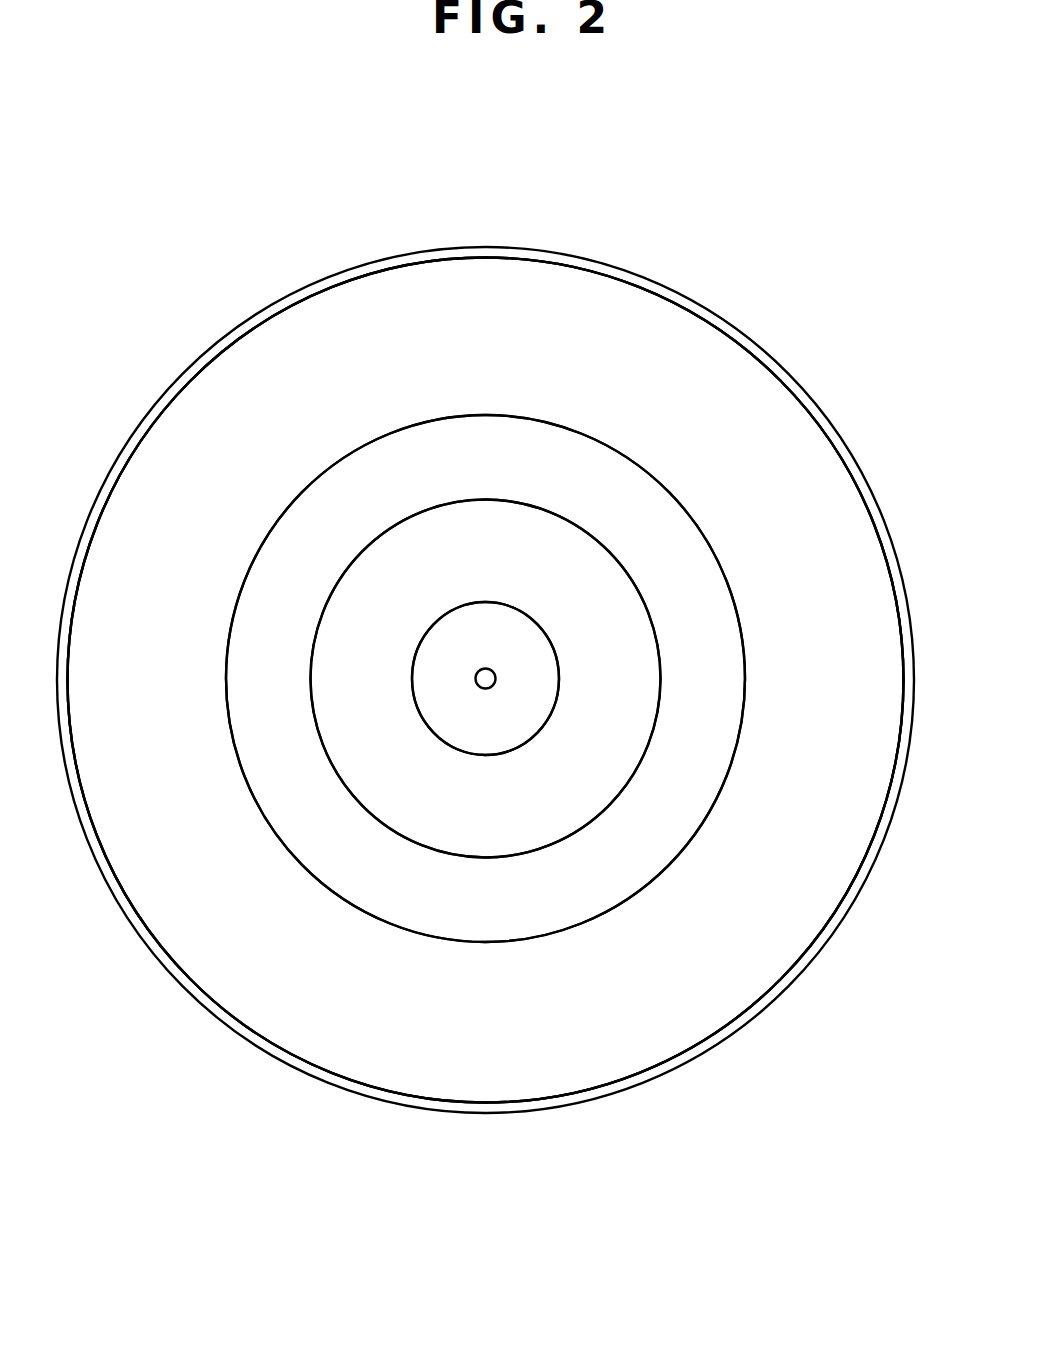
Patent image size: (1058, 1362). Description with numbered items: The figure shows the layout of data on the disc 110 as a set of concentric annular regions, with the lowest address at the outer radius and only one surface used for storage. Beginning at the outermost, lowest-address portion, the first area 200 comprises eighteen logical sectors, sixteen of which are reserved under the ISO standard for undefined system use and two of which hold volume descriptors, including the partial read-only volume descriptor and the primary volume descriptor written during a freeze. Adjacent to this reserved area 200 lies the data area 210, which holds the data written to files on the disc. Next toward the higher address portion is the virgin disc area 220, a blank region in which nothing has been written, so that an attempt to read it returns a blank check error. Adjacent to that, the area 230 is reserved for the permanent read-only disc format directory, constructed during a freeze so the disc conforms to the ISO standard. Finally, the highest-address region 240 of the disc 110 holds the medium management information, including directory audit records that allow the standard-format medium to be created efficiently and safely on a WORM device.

The disc 110 is at (653, 257).
The reserved area of logical sectors 200 is at (232, 335).
The data area 210 is at (457, 330).
The virgin disc area 220 is at (310, 838).
The reserved read-only area 230 is at (477, 830).
The medium management information region 240 is at (510, 714).